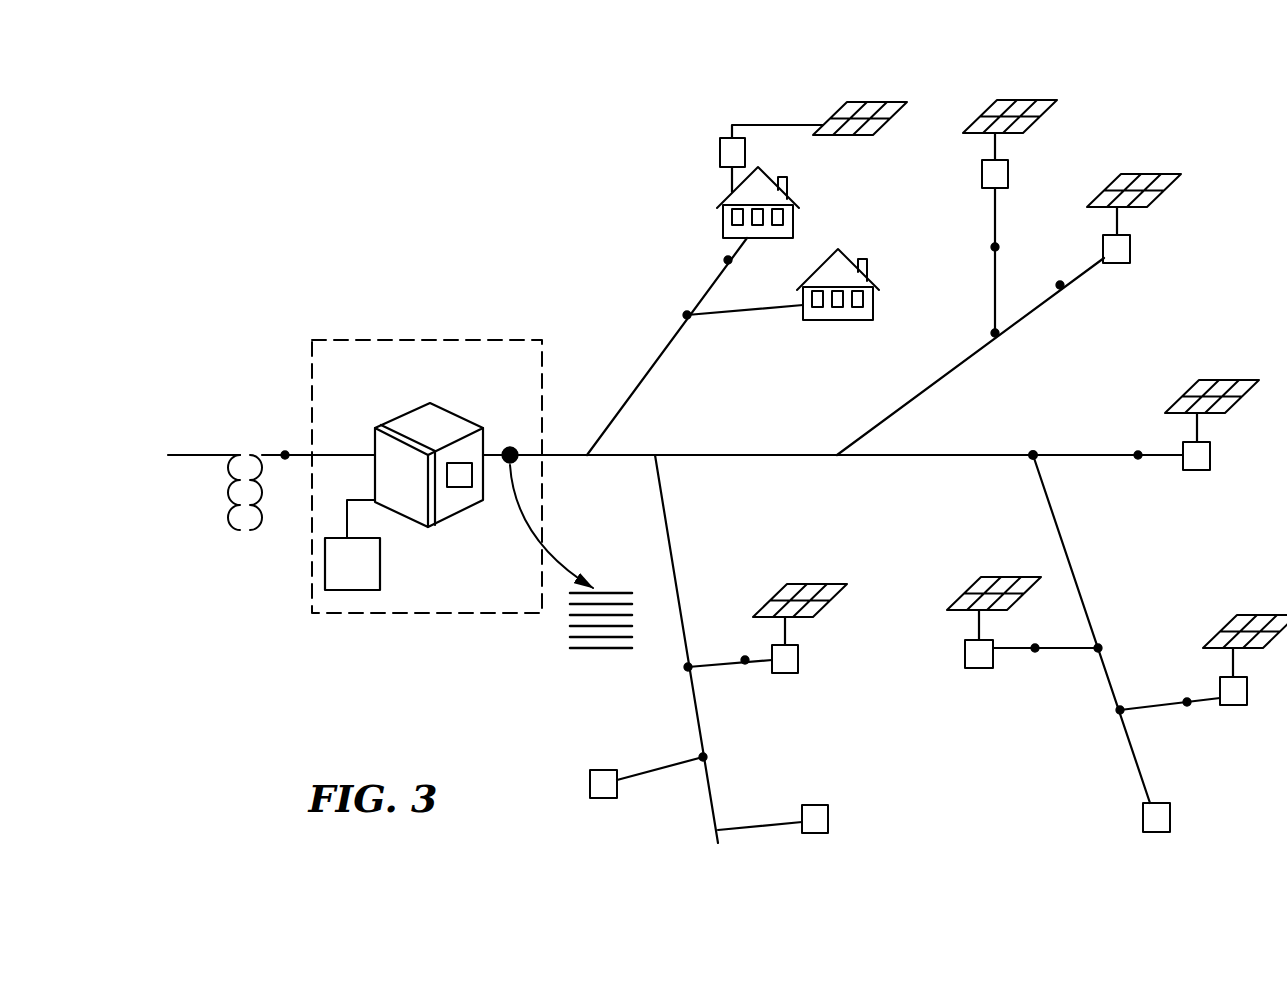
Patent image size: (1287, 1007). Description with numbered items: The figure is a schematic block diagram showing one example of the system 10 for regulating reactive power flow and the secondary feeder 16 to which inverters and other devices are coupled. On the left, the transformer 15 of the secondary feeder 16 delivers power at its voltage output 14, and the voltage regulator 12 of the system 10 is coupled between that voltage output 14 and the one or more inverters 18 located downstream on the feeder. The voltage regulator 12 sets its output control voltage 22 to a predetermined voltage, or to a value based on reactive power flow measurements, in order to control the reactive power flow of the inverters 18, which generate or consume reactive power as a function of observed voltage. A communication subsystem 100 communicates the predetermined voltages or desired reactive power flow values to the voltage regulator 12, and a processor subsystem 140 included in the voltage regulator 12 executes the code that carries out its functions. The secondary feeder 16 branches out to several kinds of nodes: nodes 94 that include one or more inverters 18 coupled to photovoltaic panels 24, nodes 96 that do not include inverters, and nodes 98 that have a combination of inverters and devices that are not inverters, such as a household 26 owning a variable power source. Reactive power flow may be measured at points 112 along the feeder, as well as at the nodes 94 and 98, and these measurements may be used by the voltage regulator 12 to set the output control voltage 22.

The system 10 is at (357, 613).
The voltage regulator 12 is at (387, 490).
The voltage output 14 is at (262, 453).
The transformer 15 is at (242, 535).
The secondary feeder 16 is at (467, 198).
The inverter 18 is at (720, 150).
The output control voltage 22 is at (562, 637).
The photovoltaic panel 24 is at (845, 106).
The household 26 is at (824, 260).
The node 94 is at (995, 333).
The node 96 is at (703, 757).
The node 98 is at (687, 315).
The communication subsystem 100 is at (332, 578).
The point 112 is at (285, 452).
The processor subsystem 140 is at (458, 478).